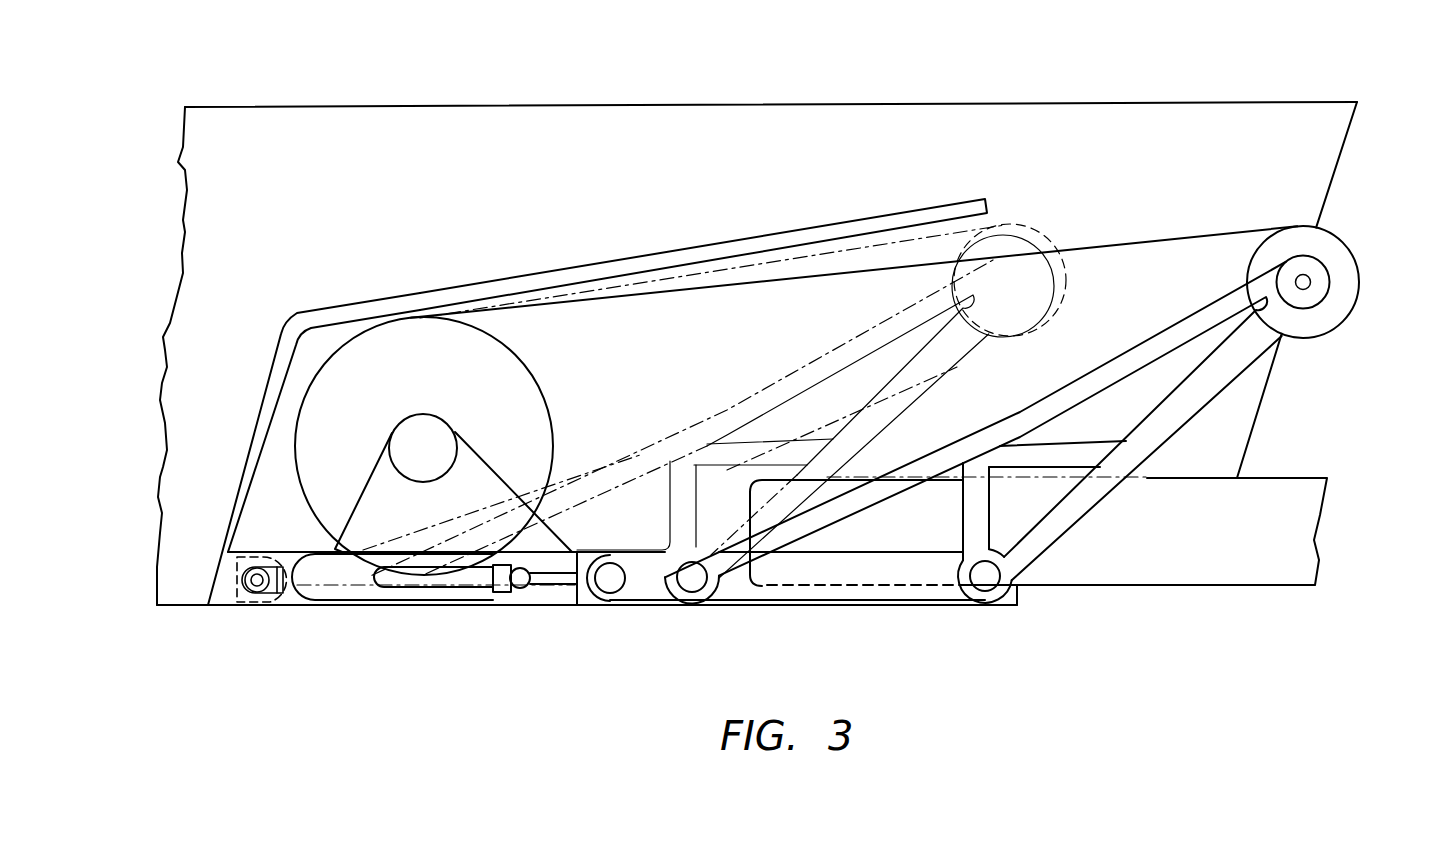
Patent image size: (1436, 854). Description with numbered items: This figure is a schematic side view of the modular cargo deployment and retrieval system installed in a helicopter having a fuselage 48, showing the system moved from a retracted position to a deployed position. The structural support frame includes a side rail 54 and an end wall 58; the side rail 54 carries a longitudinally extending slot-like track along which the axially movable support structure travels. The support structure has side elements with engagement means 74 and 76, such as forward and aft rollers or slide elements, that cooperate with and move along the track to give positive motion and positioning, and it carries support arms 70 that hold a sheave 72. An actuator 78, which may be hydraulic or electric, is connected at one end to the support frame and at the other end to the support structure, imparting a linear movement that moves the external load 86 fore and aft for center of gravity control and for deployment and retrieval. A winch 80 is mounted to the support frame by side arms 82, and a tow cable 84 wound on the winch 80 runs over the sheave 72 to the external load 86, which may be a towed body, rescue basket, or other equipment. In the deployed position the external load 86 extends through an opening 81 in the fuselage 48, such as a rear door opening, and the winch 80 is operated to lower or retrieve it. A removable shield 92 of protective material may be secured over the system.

The fuselage 48 is at (822, 122).
The opening 81 is at (1355, 127).
The sheave 72 is at (1338, 236).
The tow cable 84 is at (715, 287).
The support arms 70 is at (1175, 322).
The removable shield 92 is at (280, 362).
The winch 80 is at (532, 411).
The side arms 82 is at (472, 468).
The external load 86 is at (1303, 478).
The end wall 58 is at (236, 605).
The side rail 54 is at (300, 607).
The actuator 78 is at (367, 590).
The engagement means 74 is at (611, 585).
The engagement means 76 is at (985, 586).